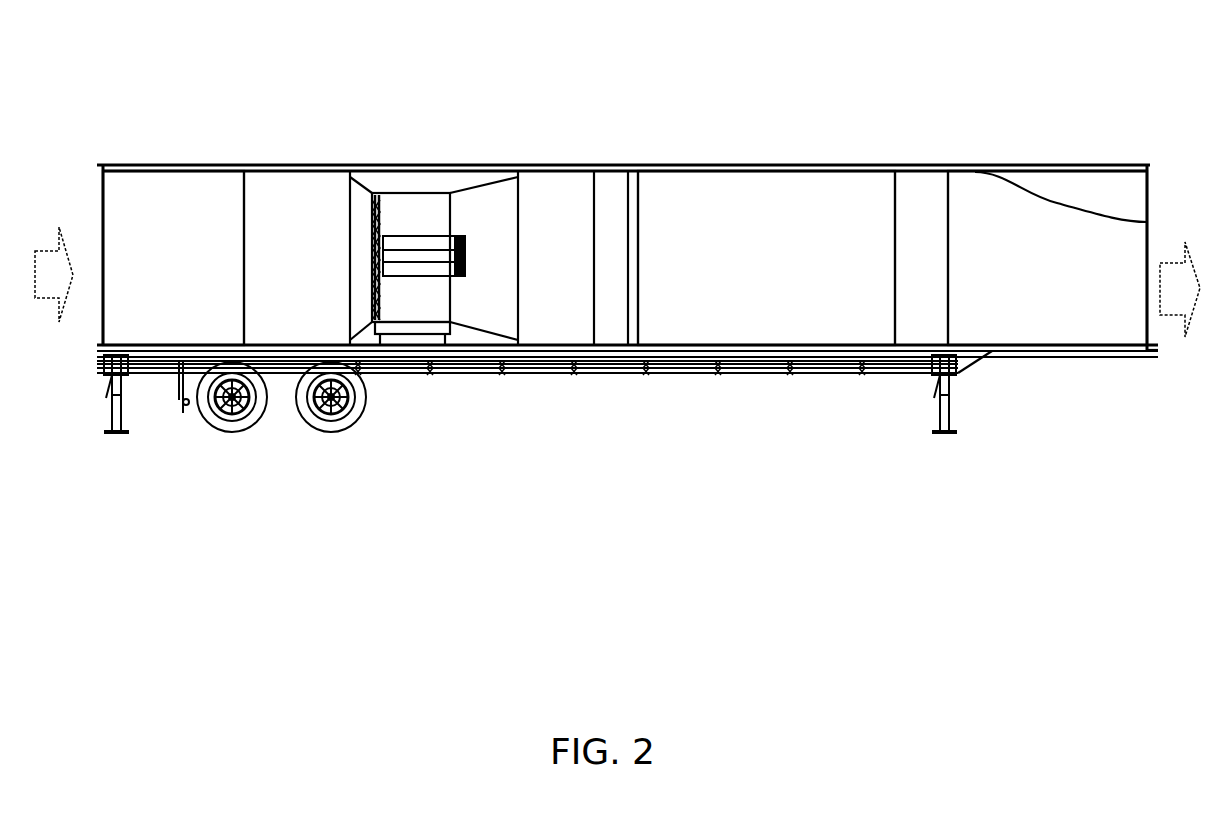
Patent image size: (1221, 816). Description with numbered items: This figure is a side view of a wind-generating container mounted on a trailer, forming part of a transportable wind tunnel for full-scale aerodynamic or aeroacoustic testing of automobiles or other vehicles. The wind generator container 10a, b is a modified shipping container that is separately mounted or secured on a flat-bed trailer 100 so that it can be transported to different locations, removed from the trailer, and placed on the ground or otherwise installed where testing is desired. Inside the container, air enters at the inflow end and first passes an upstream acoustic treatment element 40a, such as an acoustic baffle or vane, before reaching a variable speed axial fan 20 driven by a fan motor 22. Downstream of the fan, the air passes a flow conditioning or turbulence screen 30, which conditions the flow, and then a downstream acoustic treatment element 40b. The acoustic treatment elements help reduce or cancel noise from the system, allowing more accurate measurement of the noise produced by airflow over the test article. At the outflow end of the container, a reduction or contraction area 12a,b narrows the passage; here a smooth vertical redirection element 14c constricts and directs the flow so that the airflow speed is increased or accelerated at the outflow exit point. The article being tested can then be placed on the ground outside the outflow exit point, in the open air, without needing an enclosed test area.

The wind generator container 10a, b is at (777, 163).
The reduction or contraction area 12a,b is at (1060, 301).
The vertical redirection element 14c is at (1058, 204).
The variable speed axial fan 20 is at (384, 214).
The fan motor 22 is at (436, 243).
The flow conditioning or turbulence screen 30 is at (592, 203).
The upstream acoustic treatment element 40a is at (157, 218).
The downstream acoustic treatment element 40b is at (773, 320).
The flat-bed trailer 100 is at (568, 365).